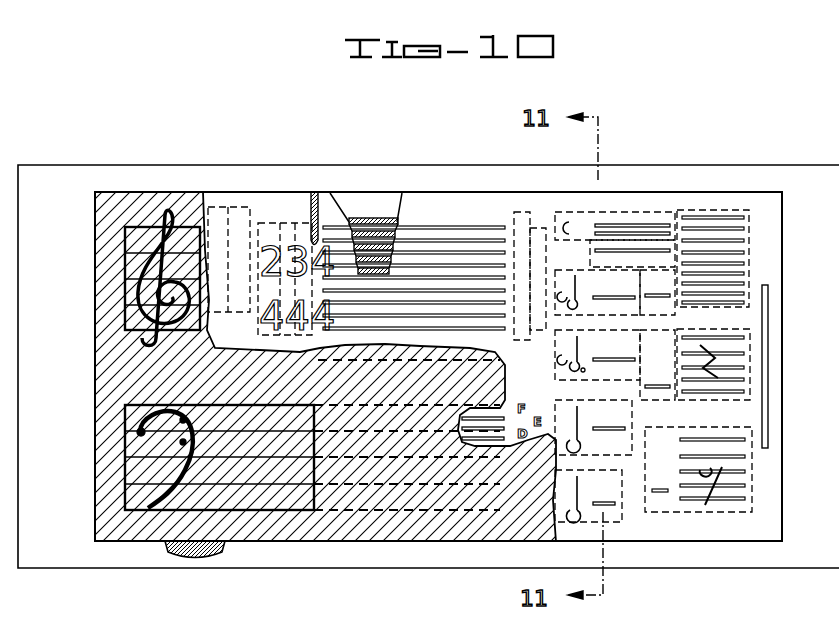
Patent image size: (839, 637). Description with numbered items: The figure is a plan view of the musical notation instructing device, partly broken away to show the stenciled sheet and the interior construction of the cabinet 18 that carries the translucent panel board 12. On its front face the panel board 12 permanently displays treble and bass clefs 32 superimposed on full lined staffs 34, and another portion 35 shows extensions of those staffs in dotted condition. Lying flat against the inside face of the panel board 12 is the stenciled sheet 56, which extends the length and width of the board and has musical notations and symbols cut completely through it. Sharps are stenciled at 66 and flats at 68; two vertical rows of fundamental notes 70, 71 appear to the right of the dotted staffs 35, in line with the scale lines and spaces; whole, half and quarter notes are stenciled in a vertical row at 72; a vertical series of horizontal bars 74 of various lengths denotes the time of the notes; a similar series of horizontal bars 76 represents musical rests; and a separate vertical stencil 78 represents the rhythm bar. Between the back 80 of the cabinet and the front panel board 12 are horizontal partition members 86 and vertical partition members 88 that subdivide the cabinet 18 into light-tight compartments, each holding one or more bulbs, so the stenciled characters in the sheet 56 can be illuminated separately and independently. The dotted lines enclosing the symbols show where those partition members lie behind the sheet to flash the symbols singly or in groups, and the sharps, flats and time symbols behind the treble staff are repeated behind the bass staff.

The panel board 12 is at (103, 203).
The cabinet 18 is at (645, 177).
The clefs 32 is at (163, 232).
The full lined staffs 34 is at (264, 492).
The dotted staffs 35 is at (330, 490).
The stenciled sheet 56 is at (214, 205).
The sharps 66 is at (262, 250).
The flats 68 is at (222, 308).
The fundamental notes 70 is at (522, 212).
The note letter column 71 is at (537, 226).
The notes 72 is at (585, 225).
The horizontal bars 74 is at (592, 300).
The horizontal bars 76 is at (700, 217).
The vertical stencil 78 is at (769, 351).
The back 80 is at (350, 201).
The horizontal partition members 86 is at (385, 218).
The vertical partition members 88 is at (318, 205).